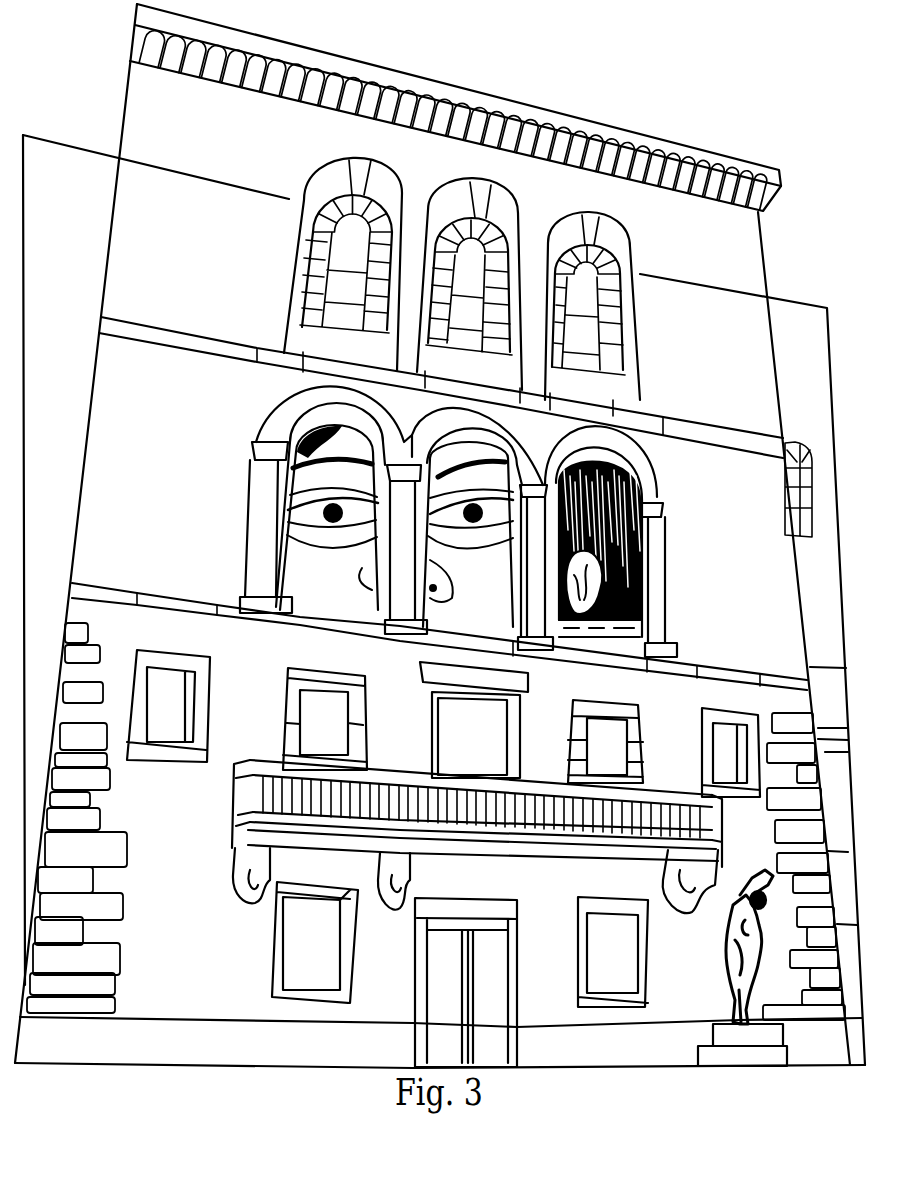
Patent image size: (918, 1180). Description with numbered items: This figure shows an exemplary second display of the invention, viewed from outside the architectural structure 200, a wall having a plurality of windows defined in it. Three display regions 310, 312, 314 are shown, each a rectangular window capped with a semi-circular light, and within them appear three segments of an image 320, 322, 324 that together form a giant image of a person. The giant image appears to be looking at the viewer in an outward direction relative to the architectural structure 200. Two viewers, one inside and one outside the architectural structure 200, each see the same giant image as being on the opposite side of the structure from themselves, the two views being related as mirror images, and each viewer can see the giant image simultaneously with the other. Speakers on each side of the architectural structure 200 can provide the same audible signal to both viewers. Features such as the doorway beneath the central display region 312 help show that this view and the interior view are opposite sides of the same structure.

The architectural structure 200 is at (413, 70).
The first display region 310 is at (333, 422).
The second display region 312 is at (463, 443).
The third display region 314 is at (590, 460).
The first image segment 320 is at (332, 511).
The second image segment 322 is at (470, 534).
The third image segment 324 is at (603, 586).